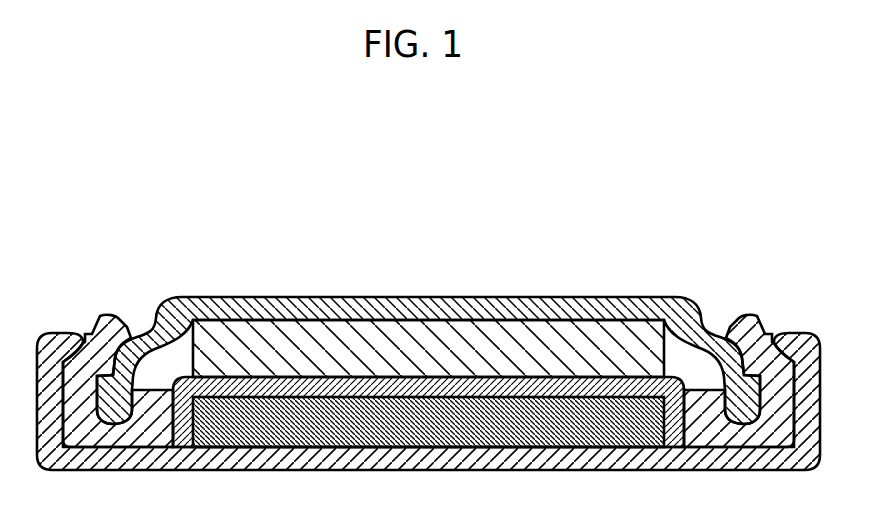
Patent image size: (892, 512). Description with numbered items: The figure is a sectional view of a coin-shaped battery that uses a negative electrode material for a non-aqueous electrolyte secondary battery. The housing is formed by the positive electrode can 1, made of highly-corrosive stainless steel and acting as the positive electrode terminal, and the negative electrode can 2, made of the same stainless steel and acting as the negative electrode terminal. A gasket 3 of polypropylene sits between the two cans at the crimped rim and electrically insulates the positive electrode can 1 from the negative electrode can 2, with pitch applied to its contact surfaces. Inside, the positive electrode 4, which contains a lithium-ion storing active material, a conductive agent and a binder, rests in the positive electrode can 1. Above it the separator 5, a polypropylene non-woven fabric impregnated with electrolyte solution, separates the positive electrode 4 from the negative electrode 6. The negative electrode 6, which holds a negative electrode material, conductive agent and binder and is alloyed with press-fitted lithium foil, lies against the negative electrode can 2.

The positive electrode can 1 is at (807, 422).
The negative electrode can 2 is at (243, 303).
The gasket 3 is at (758, 337).
The positive electrode 4 is at (610, 410).
The separator 5 is at (458, 380).
The negative electrode 6 is at (330, 342).